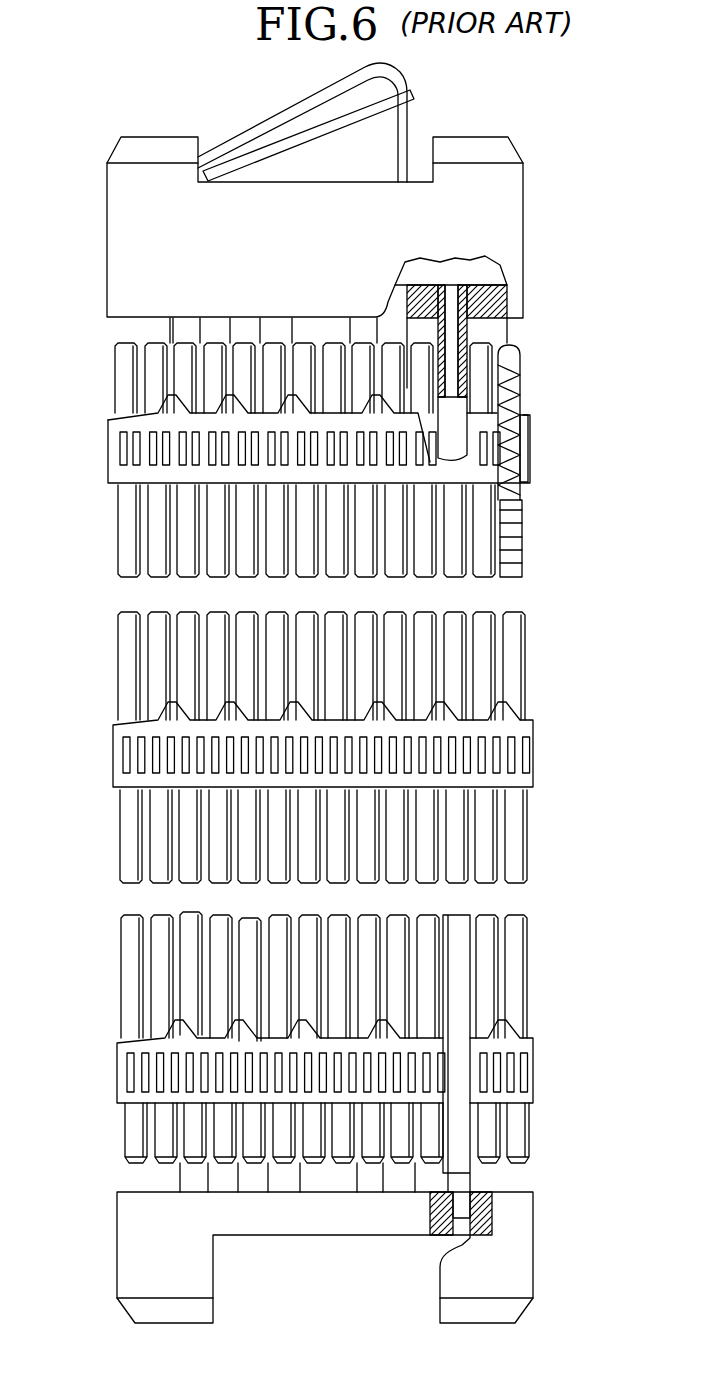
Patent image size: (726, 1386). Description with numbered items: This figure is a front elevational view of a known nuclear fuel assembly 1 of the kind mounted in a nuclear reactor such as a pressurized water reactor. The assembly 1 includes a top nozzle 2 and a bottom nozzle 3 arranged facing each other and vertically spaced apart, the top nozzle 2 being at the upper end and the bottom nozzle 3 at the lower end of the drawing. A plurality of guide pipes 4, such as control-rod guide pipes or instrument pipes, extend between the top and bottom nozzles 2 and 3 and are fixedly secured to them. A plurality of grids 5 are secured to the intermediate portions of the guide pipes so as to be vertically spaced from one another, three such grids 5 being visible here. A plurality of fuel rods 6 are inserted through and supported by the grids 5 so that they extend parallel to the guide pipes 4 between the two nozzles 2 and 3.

The nuclear fuel assembly 1 is at (524, 116).
The top nozzle 2 is at (523, 270).
The bottom nozzle 3 is at (533, 1258).
The guide pipes 4 is at (170, 325).
The grids 5 is at (110, 456).
The fuel rods 6 is at (113, 391).